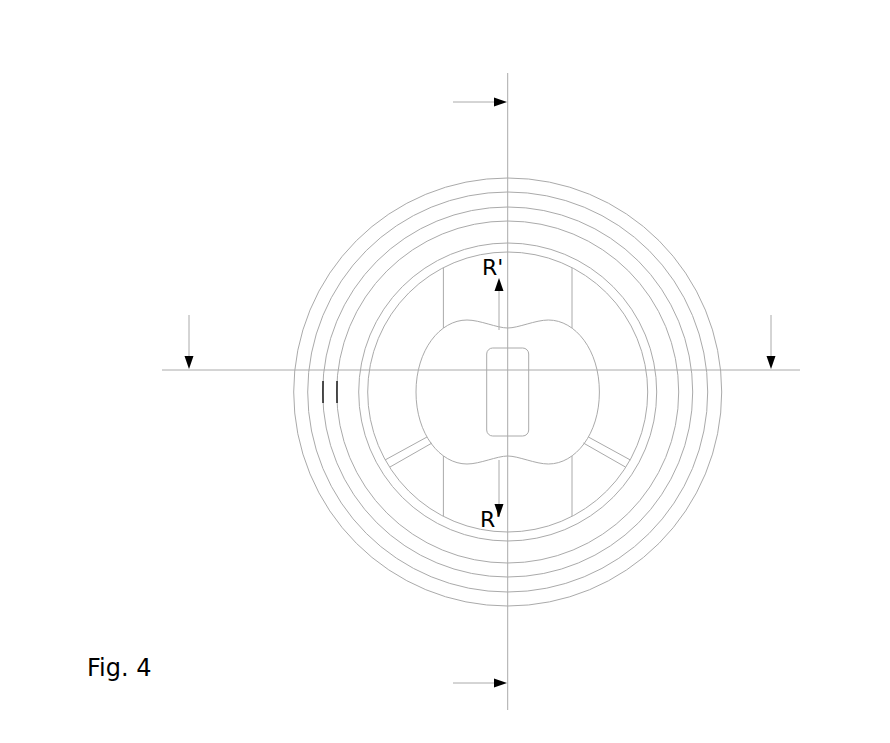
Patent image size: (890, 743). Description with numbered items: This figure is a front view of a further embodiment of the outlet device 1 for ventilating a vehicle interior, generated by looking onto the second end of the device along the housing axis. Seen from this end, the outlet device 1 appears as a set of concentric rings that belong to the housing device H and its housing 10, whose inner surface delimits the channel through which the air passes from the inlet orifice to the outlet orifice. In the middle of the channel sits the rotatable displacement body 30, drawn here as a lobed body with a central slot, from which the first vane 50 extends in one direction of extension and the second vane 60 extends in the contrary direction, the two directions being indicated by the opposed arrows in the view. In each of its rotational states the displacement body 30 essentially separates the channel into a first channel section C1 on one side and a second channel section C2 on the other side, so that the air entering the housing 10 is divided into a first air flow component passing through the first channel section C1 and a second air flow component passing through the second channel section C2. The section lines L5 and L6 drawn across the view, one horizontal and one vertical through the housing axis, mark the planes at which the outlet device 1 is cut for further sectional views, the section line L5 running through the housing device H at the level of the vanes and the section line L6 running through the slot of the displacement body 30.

The outlet device 1 is at (620, 128).
The housing 10 is at (390, 216).
The housing device H is at (640, 167).
The second vane 60 is at (468, 273).
The first channel section C1 is at (408, 325).
The second channel section C2 is at (607, 320).
The first vane 50 is at (470, 510).
The displacement body 30 is at (522, 417).
The section line L5 is at (483, 348).
The section line L6 is at (488, 396).